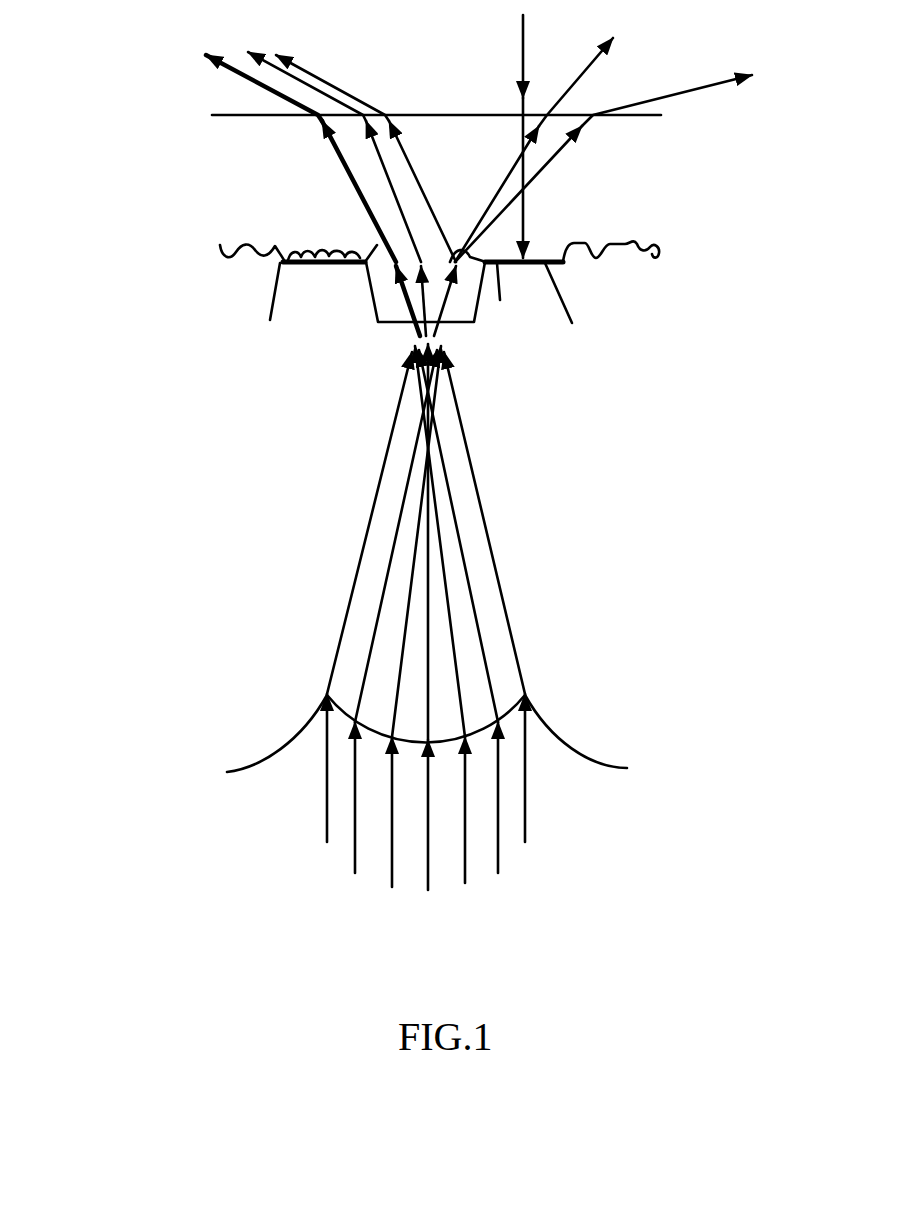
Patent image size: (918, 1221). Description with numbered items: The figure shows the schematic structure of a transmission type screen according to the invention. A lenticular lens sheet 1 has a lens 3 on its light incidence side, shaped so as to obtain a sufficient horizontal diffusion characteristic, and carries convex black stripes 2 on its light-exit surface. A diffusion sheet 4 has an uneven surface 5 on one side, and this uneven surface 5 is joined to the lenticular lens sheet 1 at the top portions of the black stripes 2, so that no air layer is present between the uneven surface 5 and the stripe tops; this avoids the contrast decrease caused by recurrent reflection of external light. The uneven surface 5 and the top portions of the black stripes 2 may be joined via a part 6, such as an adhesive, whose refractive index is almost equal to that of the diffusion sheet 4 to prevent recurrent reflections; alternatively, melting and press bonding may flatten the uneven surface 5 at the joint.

The lenticular lens sheet 1 is at (555, 453).
The black stripes 2 is at (575, 307).
The lens 3 is at (613, 775).
The diffusion sheet 4 is at (648, 185).
The uneven surface 5 is at (645, 250).
The part having a refractive index almost equal to that of the diffusion sheet 6 is at (310, 246).